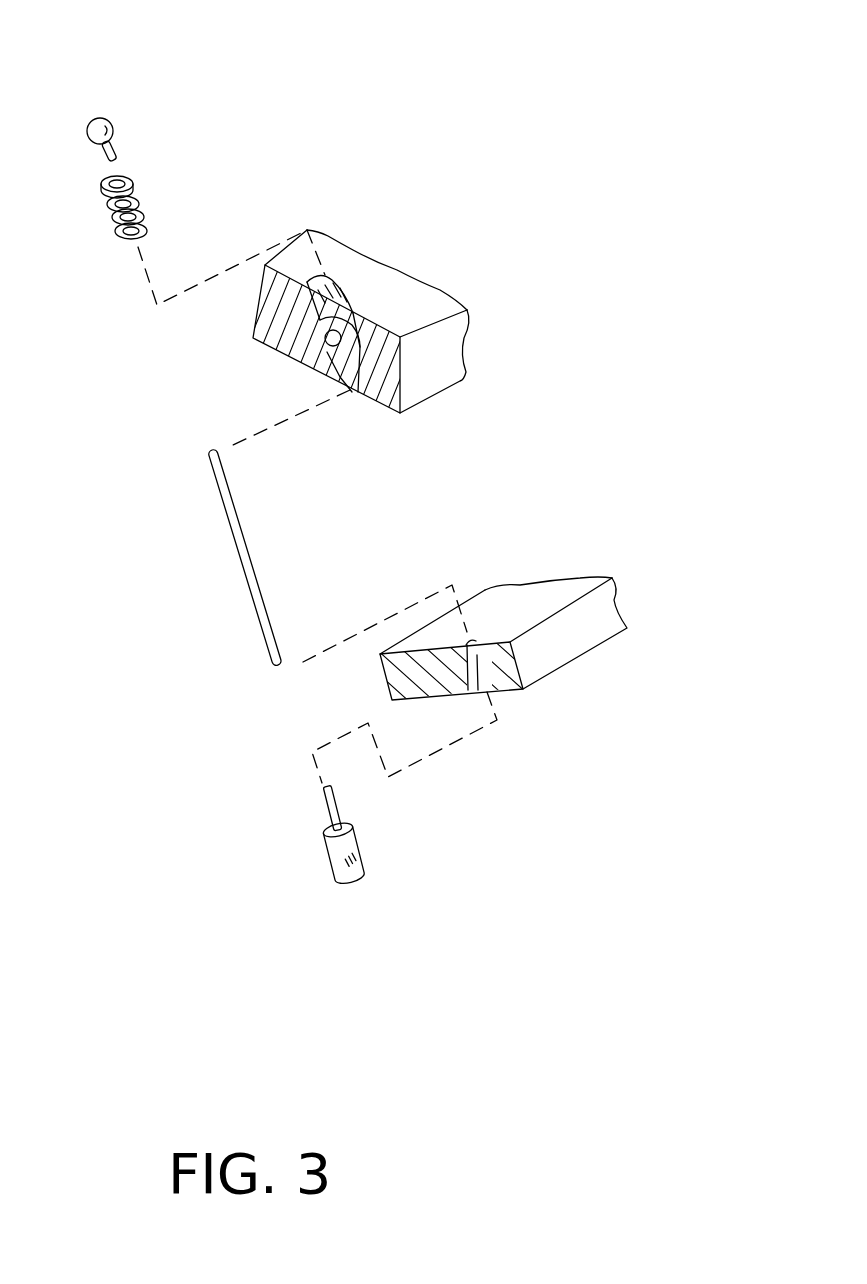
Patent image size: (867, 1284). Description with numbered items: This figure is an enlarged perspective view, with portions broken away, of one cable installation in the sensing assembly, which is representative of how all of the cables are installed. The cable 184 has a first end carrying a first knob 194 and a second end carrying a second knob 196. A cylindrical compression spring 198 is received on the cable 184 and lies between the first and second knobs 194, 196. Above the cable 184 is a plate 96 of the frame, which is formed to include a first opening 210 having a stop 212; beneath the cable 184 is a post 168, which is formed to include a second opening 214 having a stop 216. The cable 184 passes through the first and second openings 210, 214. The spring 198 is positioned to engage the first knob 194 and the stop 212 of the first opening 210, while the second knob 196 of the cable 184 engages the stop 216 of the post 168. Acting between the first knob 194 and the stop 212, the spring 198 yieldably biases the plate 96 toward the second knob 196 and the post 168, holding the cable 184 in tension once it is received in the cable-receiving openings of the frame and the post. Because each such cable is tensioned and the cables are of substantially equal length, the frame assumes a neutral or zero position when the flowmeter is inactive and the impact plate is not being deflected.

The first knob 194 is at (108, 114).
The cylindrical compression spring 198 is at (141, 213).
The plate 96 is at (452, 347).
The first opening 210 is at (322, 313).
The stop 212 is at (318, 346).
The cable 184 is at (257, 570).
The post 168 is at (607, 615).
The second opening 214 is at (480, 677).
The stop 216 is at (485, 658).
The second knob 196 is at (357, 867).